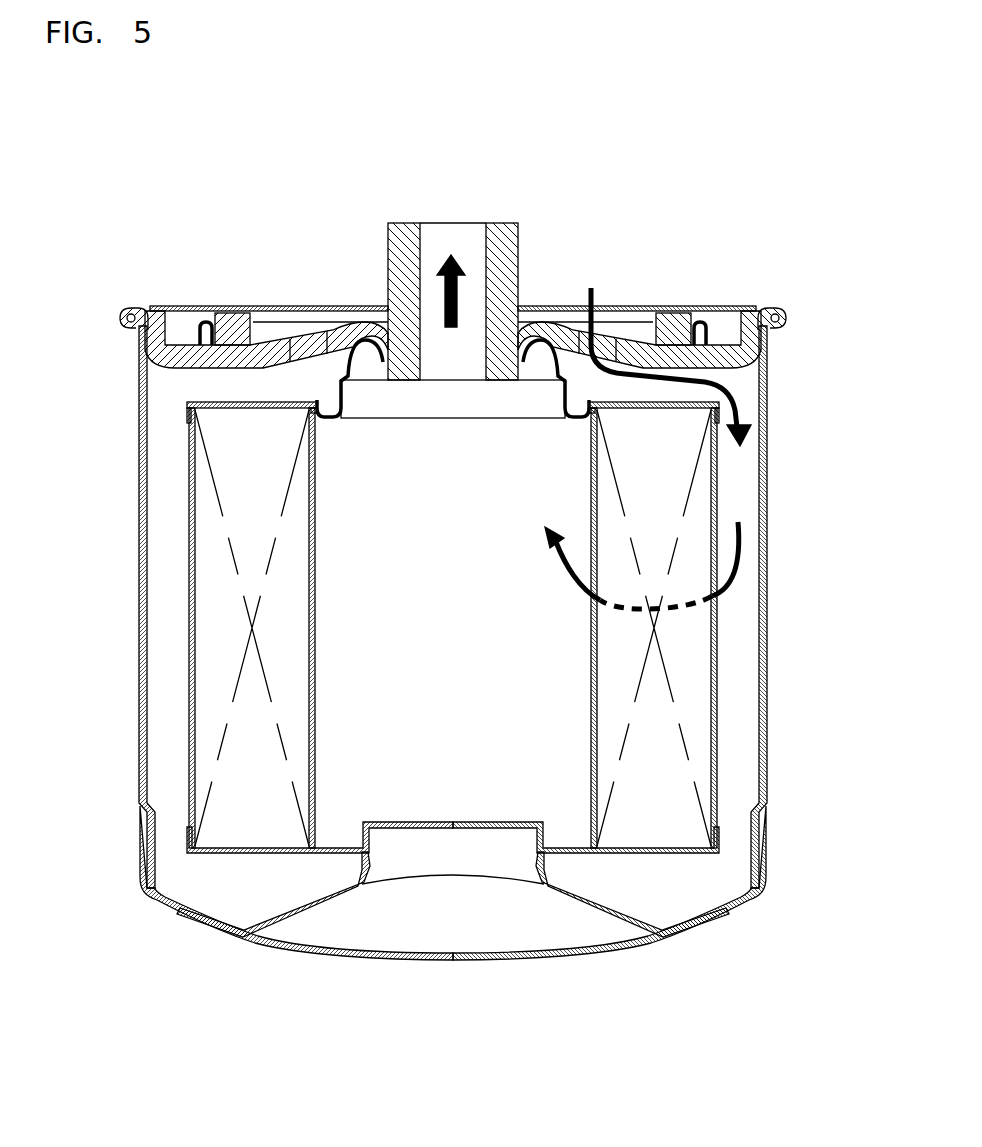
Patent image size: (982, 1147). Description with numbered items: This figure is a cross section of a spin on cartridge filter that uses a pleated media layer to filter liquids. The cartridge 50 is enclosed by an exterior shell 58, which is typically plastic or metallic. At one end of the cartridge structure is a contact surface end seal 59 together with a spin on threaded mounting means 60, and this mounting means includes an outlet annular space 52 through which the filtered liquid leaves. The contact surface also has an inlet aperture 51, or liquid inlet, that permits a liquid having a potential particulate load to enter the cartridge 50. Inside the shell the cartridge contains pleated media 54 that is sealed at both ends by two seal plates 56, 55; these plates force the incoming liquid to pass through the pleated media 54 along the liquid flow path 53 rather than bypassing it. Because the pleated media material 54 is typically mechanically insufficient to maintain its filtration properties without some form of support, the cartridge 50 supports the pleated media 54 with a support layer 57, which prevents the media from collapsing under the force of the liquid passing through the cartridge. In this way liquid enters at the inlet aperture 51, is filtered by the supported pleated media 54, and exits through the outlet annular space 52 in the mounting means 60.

The cartridge 50 is at (791, 504).
The inlet aperture 51 is at (603, 298).
The outlet annular space 52 is at (451, 225).
The liquid flow path 53 is at (734, 579).
The pleated media 54 is at (654, 788).
The seal plate 55 is at (639, 850).
The seal plate 56 is at (620, 368).
The support layer 57 is at (314, 629).
The exterior shell 58 is at (138, 434).
The contact surface end seal 59 is at (230, 313).
The spin on threaded mounting means 60 is at (518, 263).